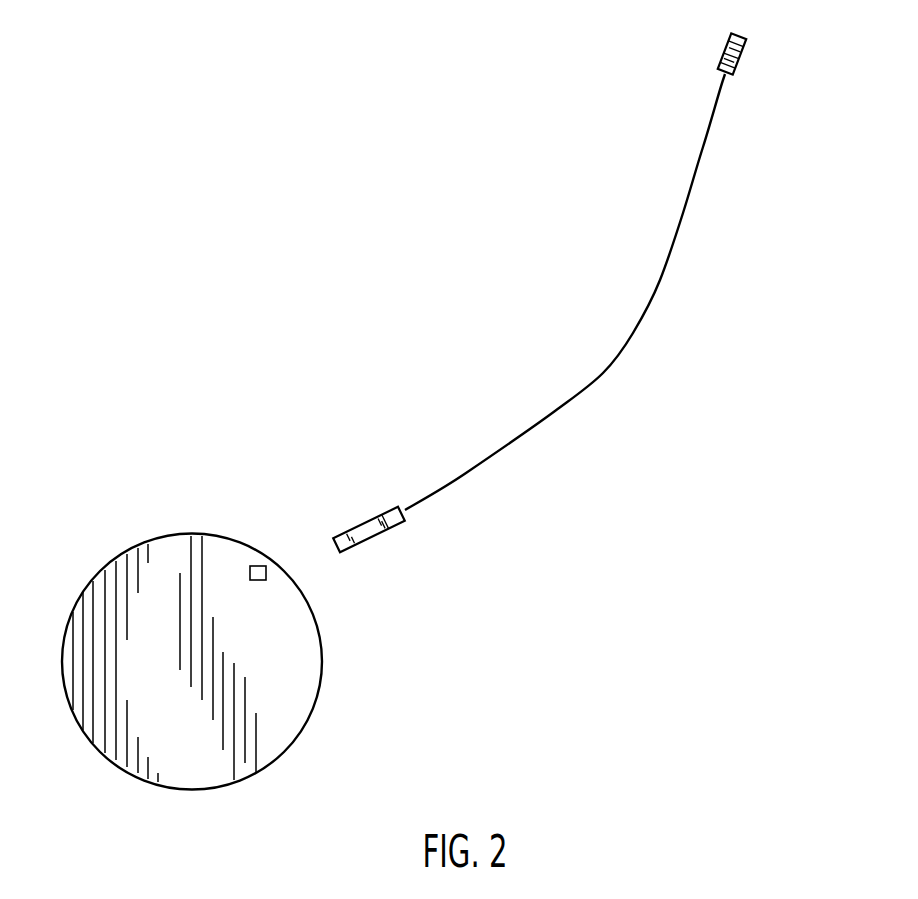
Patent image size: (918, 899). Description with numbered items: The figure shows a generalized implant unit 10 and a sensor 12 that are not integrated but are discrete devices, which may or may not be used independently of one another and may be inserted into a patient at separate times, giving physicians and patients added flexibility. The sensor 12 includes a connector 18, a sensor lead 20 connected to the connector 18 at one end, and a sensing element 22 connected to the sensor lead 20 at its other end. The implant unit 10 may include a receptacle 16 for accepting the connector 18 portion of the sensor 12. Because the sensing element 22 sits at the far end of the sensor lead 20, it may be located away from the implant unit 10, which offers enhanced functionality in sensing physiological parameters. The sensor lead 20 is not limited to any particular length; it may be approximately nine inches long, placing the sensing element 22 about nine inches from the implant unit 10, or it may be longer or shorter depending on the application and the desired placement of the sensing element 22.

The implant unit 10 is at (328, 694).
The sensor 12 is at (626, 506).
The receptacle 16 is at (250, 568).
The connector 18 is at (363, 520).
The sensor lead 20 is at (600, 377).
The sensing element 22 is at (740, 58).